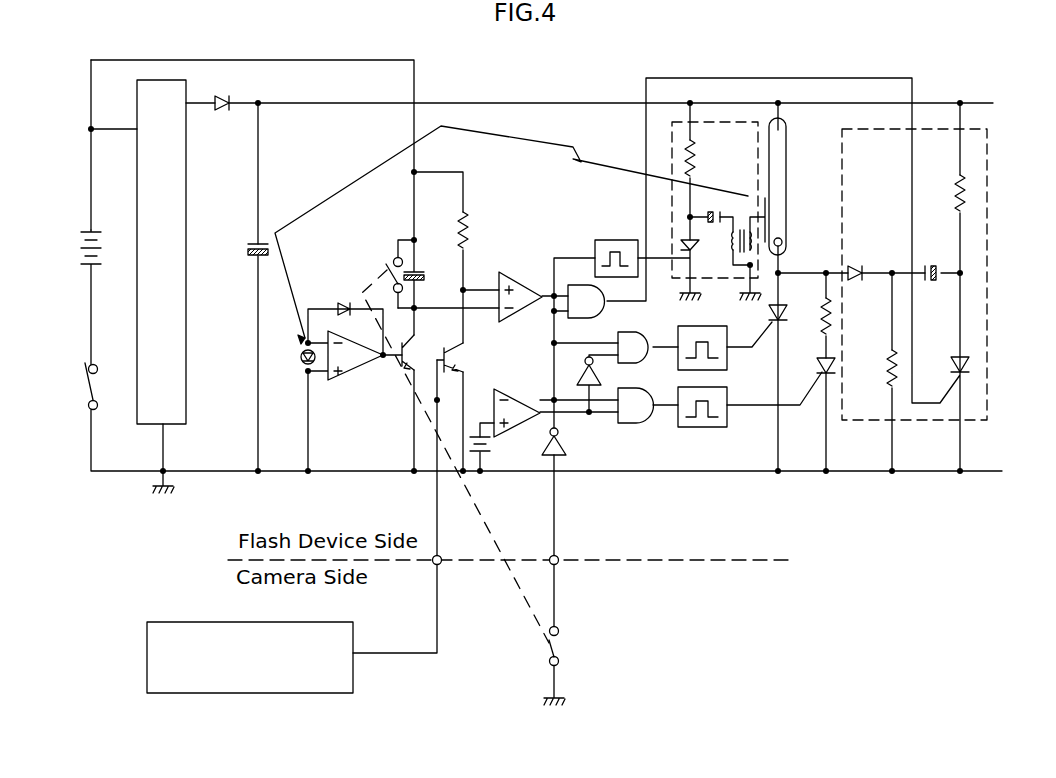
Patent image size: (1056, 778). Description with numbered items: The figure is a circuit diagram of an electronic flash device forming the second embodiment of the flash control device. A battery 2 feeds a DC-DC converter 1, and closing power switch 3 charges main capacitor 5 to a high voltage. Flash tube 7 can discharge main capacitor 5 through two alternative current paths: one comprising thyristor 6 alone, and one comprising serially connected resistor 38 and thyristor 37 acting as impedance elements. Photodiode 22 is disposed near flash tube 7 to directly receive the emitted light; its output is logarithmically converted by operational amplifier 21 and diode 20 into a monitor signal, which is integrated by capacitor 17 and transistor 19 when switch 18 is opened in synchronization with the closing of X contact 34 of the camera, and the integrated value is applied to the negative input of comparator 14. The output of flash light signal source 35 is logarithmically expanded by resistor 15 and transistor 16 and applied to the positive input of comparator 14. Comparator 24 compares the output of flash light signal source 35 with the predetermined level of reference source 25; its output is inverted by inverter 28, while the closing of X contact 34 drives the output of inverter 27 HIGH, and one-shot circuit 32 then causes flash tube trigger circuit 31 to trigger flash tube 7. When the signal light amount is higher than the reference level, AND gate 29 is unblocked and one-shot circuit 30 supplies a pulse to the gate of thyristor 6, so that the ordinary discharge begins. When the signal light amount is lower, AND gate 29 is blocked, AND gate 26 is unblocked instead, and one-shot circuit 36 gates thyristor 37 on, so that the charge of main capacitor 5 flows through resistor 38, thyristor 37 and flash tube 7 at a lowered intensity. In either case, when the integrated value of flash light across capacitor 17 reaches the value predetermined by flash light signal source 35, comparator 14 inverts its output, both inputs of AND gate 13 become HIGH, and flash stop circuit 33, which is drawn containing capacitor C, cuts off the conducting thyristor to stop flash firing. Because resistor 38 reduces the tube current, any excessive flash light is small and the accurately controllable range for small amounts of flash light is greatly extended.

The DC-DC converter 1 is at (186, 145).
The battery 2 is at (88, 250).
The power switch 3 is at (86, 384).
The main capacitor 5 is at (250, 248).
The thyristor 6 is at (782, 314).
The flash tube 7 is at (782, 122).
The AND gate 13 is at (602, 312).
The comparator 14 is at (506, 280).
The resistor 15 is at (468, 226).
The transistor 16 is at (457, 363).
The capacitor 17 is at (418, 270).
The switch 18 is at (385, 267).
The transistor 19 is at (410, 352).
The diode 20 is at (345, 306).
The operational amplifier 21 is at (360, 362).
The photodiode 22 is at (302, 354).
The comparator 24 is at (526, 410).
The reference source 25 is at (492, 445).
The AND gate 26 is at (648, 418).
The inverter 27 is at (561, 441).
The inverter 28 is at (606, 380).
The AND gate 29 is at (642, 335).
The one-shot circuit 30 is at (704, 336).
The flash tube trigger circuit 31 is at (672, 130).
The one-shot circuit 32 is at (618, 240).
The flash stop circuit 33 is at (985, 130).
The X contact 34 is at (548, 646).
The flash light signal source 35 is at (147, 656).
The one-shot circuit 36 is at (727, 422).
The thyristor 37 is at (818, 368).
The resistor 38 is at (822, 322).
The commutating capacitor C is at (933, 266).